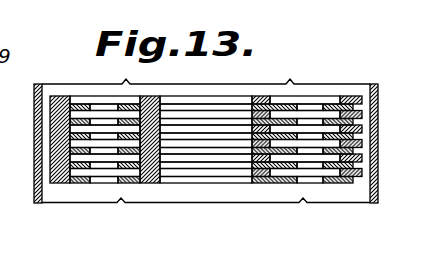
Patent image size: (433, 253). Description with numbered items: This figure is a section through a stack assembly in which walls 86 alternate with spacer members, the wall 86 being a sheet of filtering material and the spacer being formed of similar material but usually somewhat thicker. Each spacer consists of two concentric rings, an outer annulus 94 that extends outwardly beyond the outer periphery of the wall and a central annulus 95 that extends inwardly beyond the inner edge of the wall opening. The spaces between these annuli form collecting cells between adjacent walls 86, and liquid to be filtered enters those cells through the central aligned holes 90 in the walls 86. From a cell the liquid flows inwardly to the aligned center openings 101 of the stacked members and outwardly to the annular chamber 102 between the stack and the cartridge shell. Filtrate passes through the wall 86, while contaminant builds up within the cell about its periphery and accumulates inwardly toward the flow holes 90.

The wall 86 is at (147, 184).
The holes 90 is at (103, 184).
The outer annulus 94 is at (60, 95).
The central annulus 95 is at (148, 96).
The center openings 101 is at (225, 112).
The annular chamber 102 is at (367, 138).